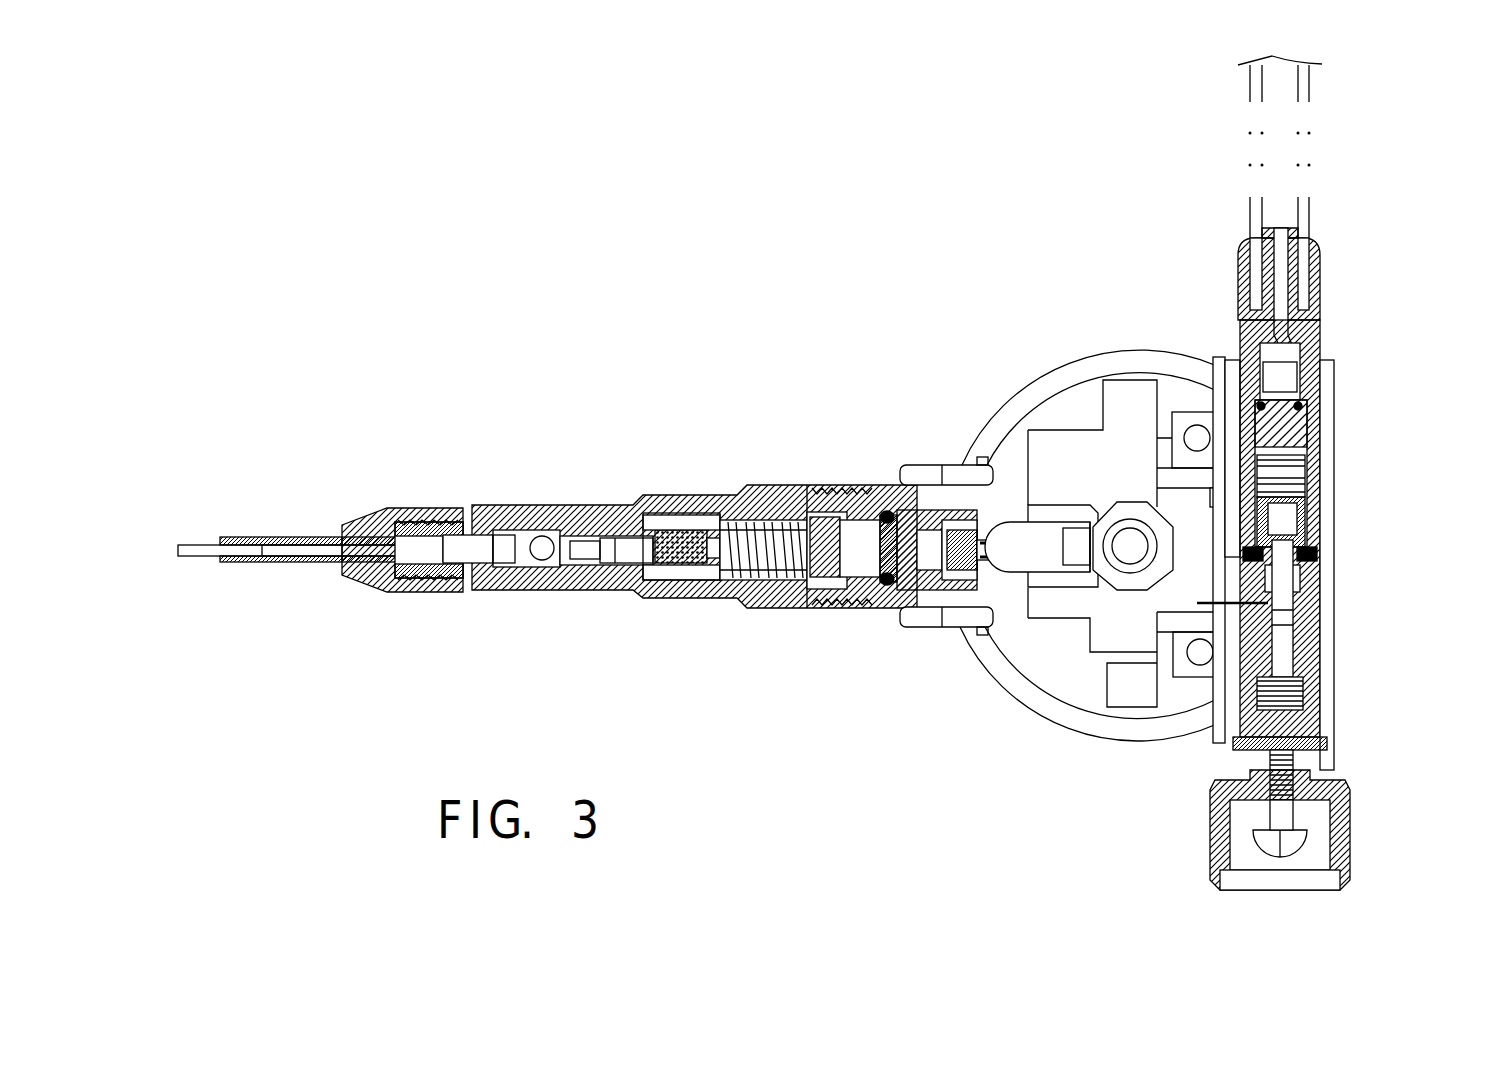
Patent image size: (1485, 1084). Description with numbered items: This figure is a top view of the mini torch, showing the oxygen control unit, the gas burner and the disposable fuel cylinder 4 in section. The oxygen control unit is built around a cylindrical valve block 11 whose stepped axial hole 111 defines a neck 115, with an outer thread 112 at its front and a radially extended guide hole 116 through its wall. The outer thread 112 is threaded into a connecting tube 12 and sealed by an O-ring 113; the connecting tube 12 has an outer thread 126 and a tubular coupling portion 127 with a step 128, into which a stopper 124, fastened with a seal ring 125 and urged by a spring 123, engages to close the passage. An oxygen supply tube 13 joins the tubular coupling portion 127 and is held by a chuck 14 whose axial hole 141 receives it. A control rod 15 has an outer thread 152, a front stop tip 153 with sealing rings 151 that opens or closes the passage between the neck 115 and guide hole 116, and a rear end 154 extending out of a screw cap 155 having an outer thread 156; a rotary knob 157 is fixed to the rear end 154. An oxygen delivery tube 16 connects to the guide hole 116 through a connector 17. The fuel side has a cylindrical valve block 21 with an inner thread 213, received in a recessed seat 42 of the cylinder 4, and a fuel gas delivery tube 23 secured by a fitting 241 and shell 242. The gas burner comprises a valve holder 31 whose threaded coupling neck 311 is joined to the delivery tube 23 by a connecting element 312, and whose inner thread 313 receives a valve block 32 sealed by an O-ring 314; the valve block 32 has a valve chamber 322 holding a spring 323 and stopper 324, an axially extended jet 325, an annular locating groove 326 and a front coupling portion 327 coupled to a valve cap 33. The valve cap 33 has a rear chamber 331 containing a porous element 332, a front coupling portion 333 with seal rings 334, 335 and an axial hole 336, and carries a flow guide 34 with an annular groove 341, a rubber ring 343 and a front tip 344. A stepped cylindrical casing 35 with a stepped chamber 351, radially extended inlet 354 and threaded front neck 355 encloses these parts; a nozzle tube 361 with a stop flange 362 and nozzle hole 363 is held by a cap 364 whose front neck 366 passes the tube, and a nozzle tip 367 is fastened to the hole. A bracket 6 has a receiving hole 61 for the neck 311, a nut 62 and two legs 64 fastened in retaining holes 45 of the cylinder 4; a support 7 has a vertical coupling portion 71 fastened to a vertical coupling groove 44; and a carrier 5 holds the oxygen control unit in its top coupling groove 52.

The disposable fuel cylinder 4 is at (1112, 355).
The carrier 5 is at (1225, 357).
The bracket 6 is at (1000, 735).
The support 7 is at (910, 465).
The cylindrical valve block 11 is at (1310, 688).
The connecting tube 12 is at (1230, 373).
The oxygen supply tube 13 is at (1310, 85).
The chuck 14 is at (1323, 300).
The control rod 15 is at (1315, 707).
The oxygen delivery tube 16 is at (1110, 700).
The connector 17 is at (1160, 685).
The cylindrical valve block 21 is at (1130, 528).
The fuel gas delivery tube 23 is at (985, 580).
The valve holder 31 is at (867, 608).
The valve block 32 is at (818, 577).
The valve cap 33 is at (698, 587).
The flow guide 34 is at (626, 580).
The stepped cylindrical casing 35 is at (647, 497).
The recessed seat 42 is at (1123, 503).
The vertical coupling groove 44 is at (957, 615).
The retaining holes 45 is at (1063, 435).
The longitudinally extended top coupling groove 52 is at (1310, 487).
The receiving hole 61 is at (885, 630).
The nut 62 is at (942, 493).
The legs 64 is at (1077, 423).
The vertical coupling portion 71 is at (980, 463).
The stepped axial hole 111 is at (1325, 595).
The outer thread 112 is at (1310, 510).
The O-ring 113 is at (1320, 552).
The neck 115 is at (1322, 533).
The radially extended guide hole 116 is at (1322, 650).
The spring 123 is at (1313, 460).
The stopper 124 is at (1310, 433).
The seal ring 125 is at (1303, 410).
The outer thread 126 is at (1322, 327).
The tubular coupling portion 127 is at (1297, 257).
The step 128 is at (1305, 387).
The axial hole 141 is at (1303, 283).
The sealing rings 151 is at (1312, 625).
The outer thread 152 is at (1230, 745).
The front stop tip 153 is at (1325, 578).
The rear end 154 is at (1330, 795).
The screw cap 155 is at (1320, 757).
The outer thread 156 is at (1322, 730).
The rotary knob 157 is at (1345, 825).
The inner thread 213 is at (1160, 540).
The fitting 241 is at (1040, 560).
The shell 242 is at (1020, 575).
The threaded coupling neck 311 is at (925, 600).
The connecting element 312 is at (1007, 483).
The inner thread 313 is at (840, 497).
The O-ring 314 is at (880, 485).
The valve chamber 322 is at (818, 497).
The spring 323 is at (742, 590).
The stopper 324 is at (825, 590).
The axially extended jet 325 is at (722, 497).
The annular locating groove 326 is at (773, 497).
The front coupling portion 327 is at (725, 600).
The rear chamber 331 is at (697, 497).
The porous element 332 is at (680, 557).
The front coupling portion 333 is at (617, 505).
The seal ring 334 is at (670, 497).
The seal ring 335 is at (645, 583).
The axial hole 336 is at (607, 563).
The annular groove 341 is at (587, 557).
The rubber ring 343 is at (585, 505).
The front tip 344 is at (519, 557).
The stepped chamber 351 is at (776, 590).
The radially extended inlet 354 is at (526, 505).
The threaded front neck 355 is at (437, 592).
The nozzle tube 361 is at (287, 562).
The stop flange 362 is at (389, 592).
The nozzle hole 363 is at (213, 527).
The cap 364 is at (395, 509).
The front neck 366 is at (337, 520).
The nozzle tip 367 is at (205, 557).